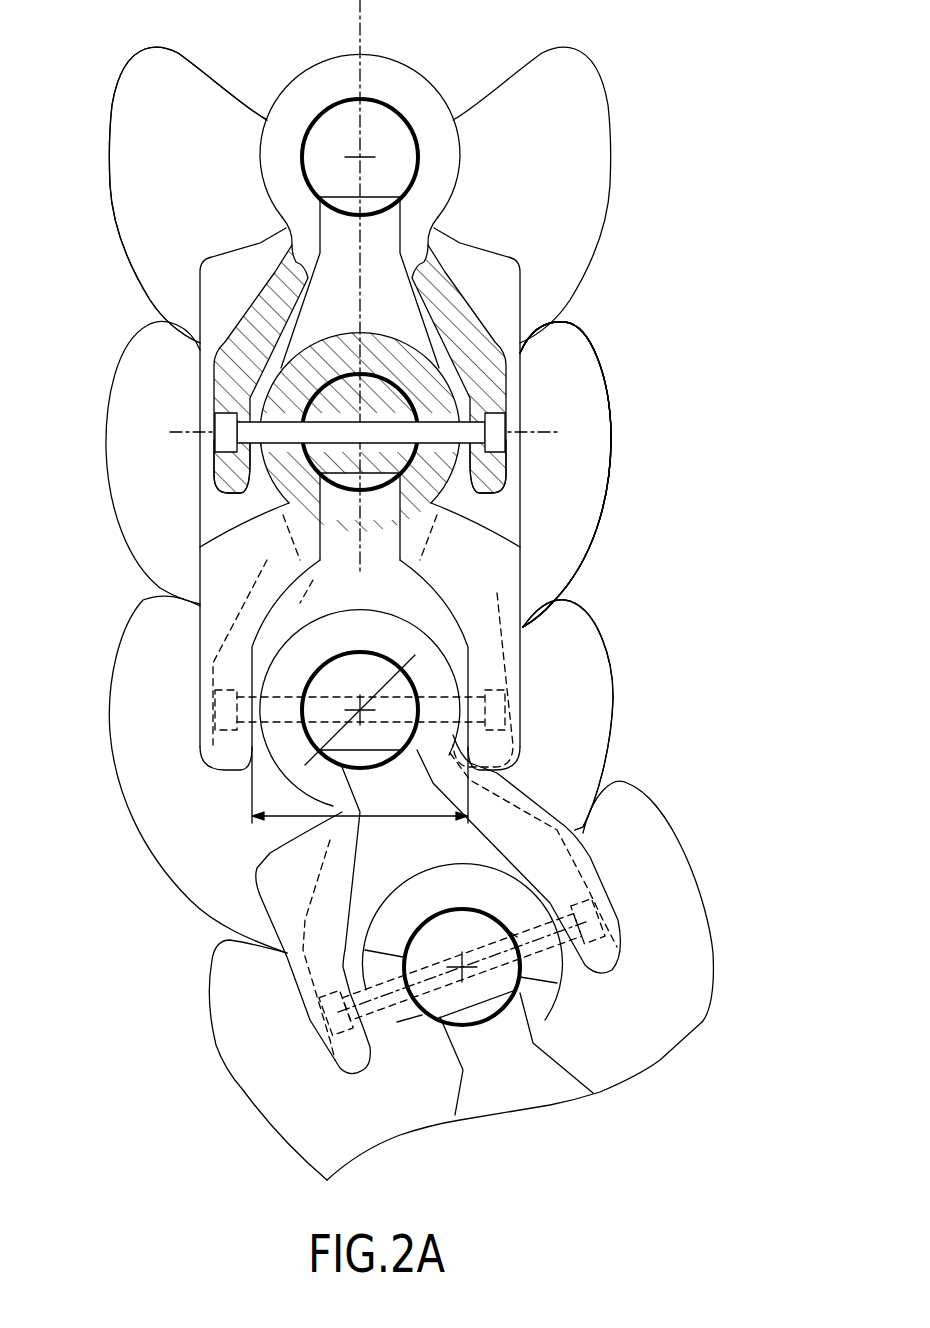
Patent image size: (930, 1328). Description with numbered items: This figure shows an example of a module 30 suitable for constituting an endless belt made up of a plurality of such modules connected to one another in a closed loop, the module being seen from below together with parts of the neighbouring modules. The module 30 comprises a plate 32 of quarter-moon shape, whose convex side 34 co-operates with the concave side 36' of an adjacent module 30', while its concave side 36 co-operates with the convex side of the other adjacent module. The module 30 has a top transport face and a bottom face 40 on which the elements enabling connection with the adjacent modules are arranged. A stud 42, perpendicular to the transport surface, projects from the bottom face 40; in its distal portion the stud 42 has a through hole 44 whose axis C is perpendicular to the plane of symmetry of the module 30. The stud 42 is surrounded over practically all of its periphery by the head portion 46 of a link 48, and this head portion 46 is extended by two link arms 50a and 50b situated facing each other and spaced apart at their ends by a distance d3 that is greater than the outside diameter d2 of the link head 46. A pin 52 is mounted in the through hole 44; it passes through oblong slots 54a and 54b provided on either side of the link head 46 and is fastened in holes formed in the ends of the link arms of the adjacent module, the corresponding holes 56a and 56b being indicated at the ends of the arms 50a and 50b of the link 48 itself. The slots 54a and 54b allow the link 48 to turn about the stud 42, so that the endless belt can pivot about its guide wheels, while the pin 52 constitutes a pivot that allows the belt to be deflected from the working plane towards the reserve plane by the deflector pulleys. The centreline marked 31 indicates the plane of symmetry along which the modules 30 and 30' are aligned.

The longitudinal axis 31 is at (362, 8).
The head portion of link 46 is at (342, 348).
The stud 42 is at (375, 385).
The concave side 36 is at (580, 455).
The link arm 50b is at (493, 382).
The module 30 is at (381, 474).
The axis C is at (555, 432).
The pin 52 is at (215, 465).
The plate 32 is at (596, 466).
The oblong slot 54a is at (292, 470).
The through hole 44 is at (347, 473).
The oblong slot 54b is at (437, 466).
The bottom face 40 is at (586, 498).
The convex side 34 is at (582, 474).
The link 48 is at (243, 587).
The concave side 36' is at (568, 715).
The adjacent module 30' is at (385, 834).
The link arm 50a is at (247, 642).
The right pin end cap (hidden) 56b is at (534, 713).
The left pin end cap (hidden) 56a is at (271, 747).
The outside diameter of link head d2 is at (391, 672).
The distance between link arm ends d3 is at (378, 815).